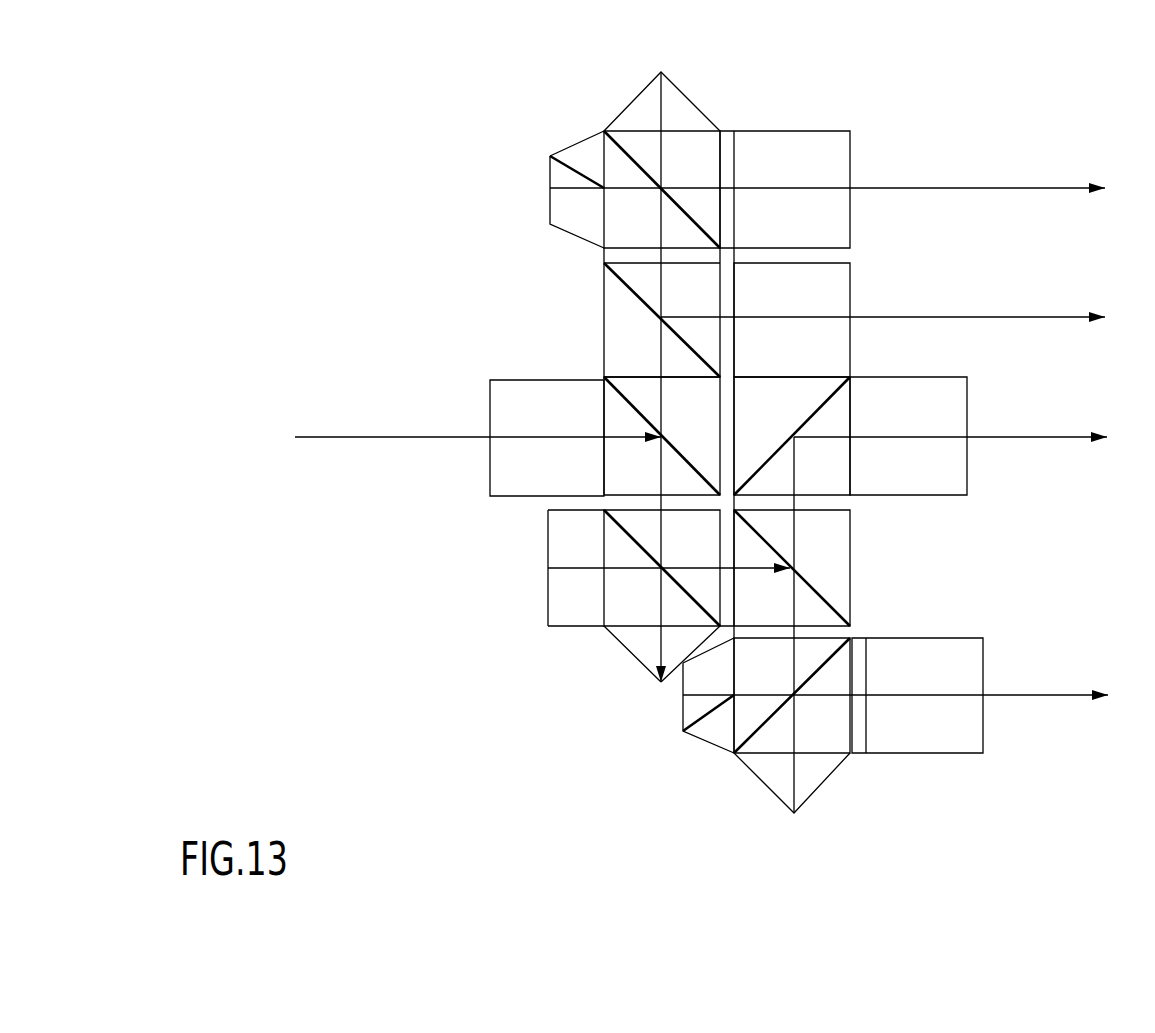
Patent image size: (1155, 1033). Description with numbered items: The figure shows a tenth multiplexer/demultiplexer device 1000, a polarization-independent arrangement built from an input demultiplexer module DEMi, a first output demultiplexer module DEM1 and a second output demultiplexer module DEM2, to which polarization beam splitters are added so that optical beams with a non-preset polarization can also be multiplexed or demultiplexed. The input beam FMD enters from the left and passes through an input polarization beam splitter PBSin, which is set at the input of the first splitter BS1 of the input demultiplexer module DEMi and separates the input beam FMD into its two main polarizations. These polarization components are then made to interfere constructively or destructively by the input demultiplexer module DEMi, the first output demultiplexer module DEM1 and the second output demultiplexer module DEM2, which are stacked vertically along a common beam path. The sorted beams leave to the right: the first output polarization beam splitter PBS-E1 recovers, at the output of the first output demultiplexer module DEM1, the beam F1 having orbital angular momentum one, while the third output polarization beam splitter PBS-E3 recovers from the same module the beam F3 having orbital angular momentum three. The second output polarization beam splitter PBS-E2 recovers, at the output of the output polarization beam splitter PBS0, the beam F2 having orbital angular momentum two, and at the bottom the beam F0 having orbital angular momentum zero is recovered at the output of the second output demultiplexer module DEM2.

The tenth multiplexer/demultiplexer device 1000 is at (710, 439).
The first output demultiplexer module DEM1 is at (603, 130).
The first splitter BS1 is at (702, 410).
The input polarization beam splitter PBSin is at (510, 380).
The input beam FMD is at (469, 441).
The third output polarization beam splitter PBS-E3 is at (792, 143).
The first output polarization beam splitter PBS-E1 is at (813, 300).
The second output polarization beam splitter PBS-E2 is at (923, 415).
The output polarization beam splitter PBS0 is at (792, 403).
The input demultiplexer module DEMi is at (605, 629).
The second output demultiplexer module DEM2 is at (854, 769).
The beam having orbital angular momentum l=3 F3 is at (846, 177).
The beam having orbital angular momentum l=1 F1 is at (901, 307).
The beam having orbital angular momentum l=2 F2 is at (969, 426).
The beam having orbital angular momentum l=0 F0 is at (913, 686).